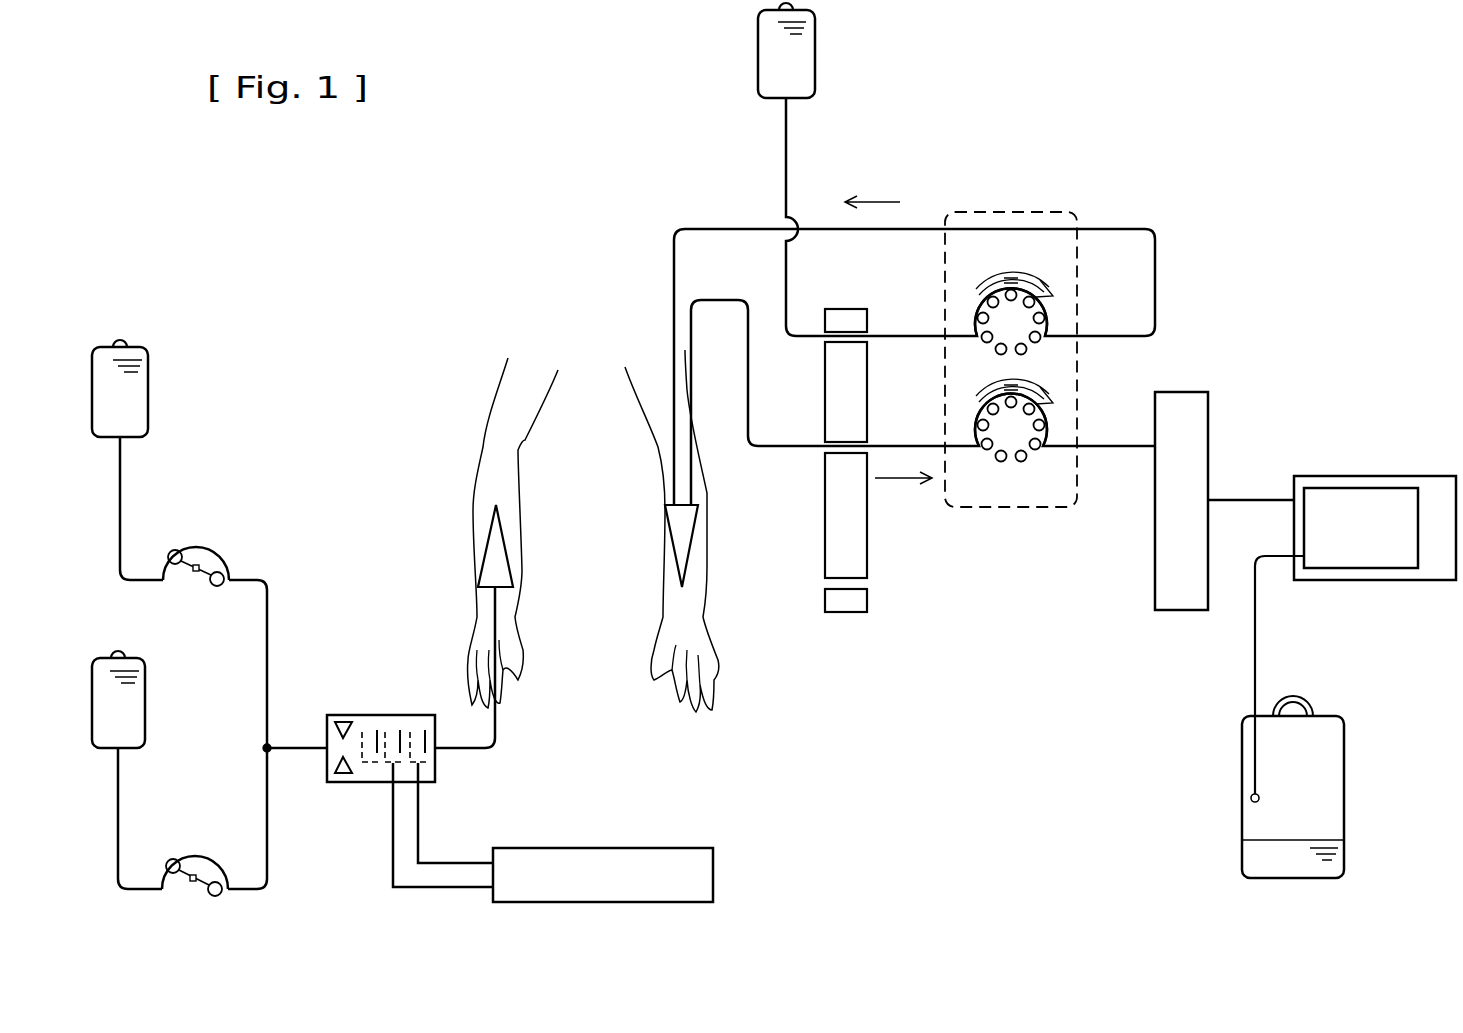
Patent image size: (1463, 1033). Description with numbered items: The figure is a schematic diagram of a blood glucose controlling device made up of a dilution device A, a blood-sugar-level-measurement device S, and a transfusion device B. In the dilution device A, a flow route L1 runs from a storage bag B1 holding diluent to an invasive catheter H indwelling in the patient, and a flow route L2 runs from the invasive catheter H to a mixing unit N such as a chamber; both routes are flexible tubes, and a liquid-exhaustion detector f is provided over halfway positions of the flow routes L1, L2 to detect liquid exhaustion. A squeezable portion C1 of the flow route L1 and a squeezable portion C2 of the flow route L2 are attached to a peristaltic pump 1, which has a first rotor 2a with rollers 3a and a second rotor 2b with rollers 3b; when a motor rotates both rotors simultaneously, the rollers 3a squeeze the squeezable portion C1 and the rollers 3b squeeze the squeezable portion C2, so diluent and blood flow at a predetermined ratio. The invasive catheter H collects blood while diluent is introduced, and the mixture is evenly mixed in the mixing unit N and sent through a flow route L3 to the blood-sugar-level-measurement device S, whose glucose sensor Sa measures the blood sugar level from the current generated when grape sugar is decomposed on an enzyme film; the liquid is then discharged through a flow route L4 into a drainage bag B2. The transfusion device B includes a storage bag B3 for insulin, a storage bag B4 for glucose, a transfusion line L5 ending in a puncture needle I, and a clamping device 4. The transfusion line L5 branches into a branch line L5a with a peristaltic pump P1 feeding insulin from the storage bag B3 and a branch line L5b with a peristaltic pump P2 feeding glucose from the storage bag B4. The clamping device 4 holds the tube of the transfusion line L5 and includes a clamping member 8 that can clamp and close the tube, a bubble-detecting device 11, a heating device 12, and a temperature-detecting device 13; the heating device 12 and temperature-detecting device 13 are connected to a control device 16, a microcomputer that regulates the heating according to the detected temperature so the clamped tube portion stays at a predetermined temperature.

The peristaltic pump 1 is at (1040, 212).
The first rotor 2a is at (969, 297).
The second rotor 2b is at (969, 409).
The rollers 3a is at (1028, 348).
The rollers 3b is at (1000, 463).
The squeezable portion C1 is at (1046, 308).
The squeezable portion C2 is at (1046, 418).
The flow route L1 is at (732, 229).
The flow route L2 is at (782, 448).
The flow route L3 is at (1260, 498).
The flow route L4 is at (1256, 630).
The transfusion line L5 is at (495, 718).
The branch line L5a is at (267, 612).
The branch line L5b is at (267, 835).
The storage bag B1 is at (758, 40).
The drainage bag B2 is at (1344, 764).
The storage bag B3 is at (148, 405).
The storage bag B4 is at (145, 718).
The peristaltic pump P1 is at (208, 547).
The peristaltic pump P2 is at (205, 856).
The liquid-exhaustion detector f is at (868, 560).
The invasive catheter H is at (676, 535).
The puncture needle I is at (500, 568).
The mixing unit N is at (1155, 590).
The blood-sugar-level-measurement device S is at (1423, 467).
The glucose sensor Sa is at (1336, 488).
The dilution device A is at (1260, 223).
The transfusion device B is at (393, 441).
The clamping device 4 is at (446, 782).
The clamping member 8 is at (346, 711).
The bubble-detecting device 11 is at (367, 730).
The heating device 12 is at (415, 730).
The temperature-detecting device 13 is at (390, 730).
The control device 16 is at (713, 860).